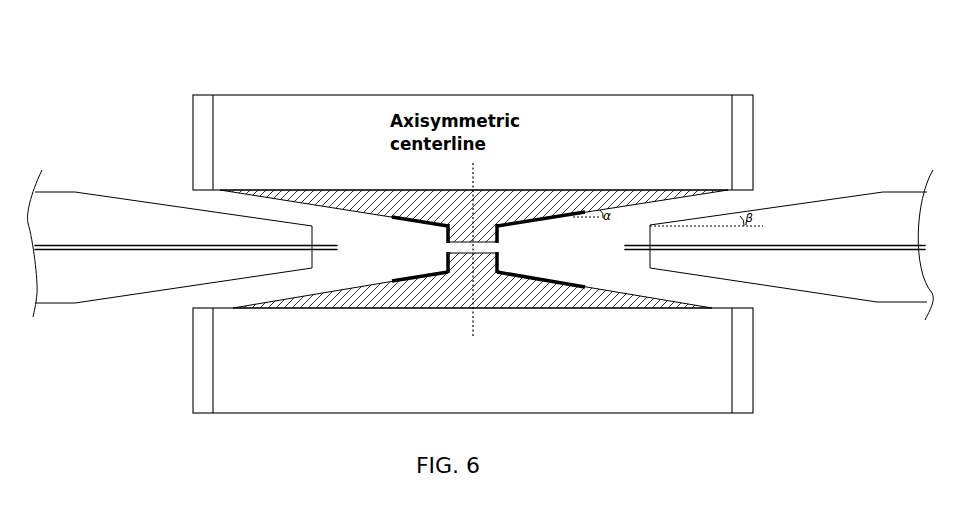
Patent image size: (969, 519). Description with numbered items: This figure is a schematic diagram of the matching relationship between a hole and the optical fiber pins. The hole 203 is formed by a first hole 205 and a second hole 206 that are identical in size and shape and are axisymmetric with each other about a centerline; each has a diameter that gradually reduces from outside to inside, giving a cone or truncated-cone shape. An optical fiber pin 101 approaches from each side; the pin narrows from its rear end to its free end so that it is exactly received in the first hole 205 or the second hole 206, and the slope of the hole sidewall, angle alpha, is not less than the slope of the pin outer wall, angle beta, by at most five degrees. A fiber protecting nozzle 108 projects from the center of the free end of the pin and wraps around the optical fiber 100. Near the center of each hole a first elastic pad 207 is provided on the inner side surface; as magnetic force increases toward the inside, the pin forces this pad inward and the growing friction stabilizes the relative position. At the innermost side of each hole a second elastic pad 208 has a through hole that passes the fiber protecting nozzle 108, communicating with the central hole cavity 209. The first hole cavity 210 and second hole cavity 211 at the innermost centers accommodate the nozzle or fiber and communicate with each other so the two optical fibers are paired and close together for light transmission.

The optical fiber 100 is at (127, 242).
The optical fiber pin 101 is at (80, 302).
The fiber protecting nozzle 108 is at (642, 247).
The hole 203 is at (352, 53).
The first hole 205 is at (337, 227).
The second hole 206 is at (570, 243).
The first elastic pad 207 is at (446, 228).
The second elastic pad 208 is at (446, 261).
The hole cavity 209 is at (432, 362).
The first hole cavity 210 is at (462, 254).
The second hole cavity 211 is at (480, 257).